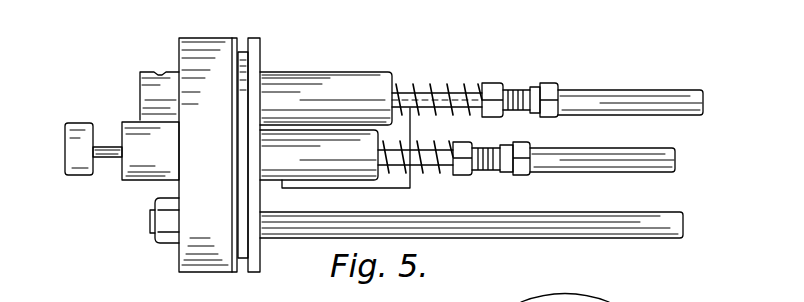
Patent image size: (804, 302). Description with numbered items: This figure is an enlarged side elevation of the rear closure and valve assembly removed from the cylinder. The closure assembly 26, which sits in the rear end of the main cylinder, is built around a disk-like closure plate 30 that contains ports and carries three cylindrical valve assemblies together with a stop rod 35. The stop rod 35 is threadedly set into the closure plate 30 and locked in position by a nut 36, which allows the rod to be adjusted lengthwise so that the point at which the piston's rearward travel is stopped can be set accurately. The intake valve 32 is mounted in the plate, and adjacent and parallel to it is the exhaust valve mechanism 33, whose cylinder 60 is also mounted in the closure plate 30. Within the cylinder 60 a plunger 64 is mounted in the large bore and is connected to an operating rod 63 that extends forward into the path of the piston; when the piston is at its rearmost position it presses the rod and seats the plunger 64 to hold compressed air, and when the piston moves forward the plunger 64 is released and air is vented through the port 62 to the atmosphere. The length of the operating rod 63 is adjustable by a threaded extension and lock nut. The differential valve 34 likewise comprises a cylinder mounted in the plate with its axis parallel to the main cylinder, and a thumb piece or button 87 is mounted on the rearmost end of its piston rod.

The closure assembly 26 is at (413, 53).
The closure plate 30 is at (218, 272).
The intake valve 32 is at (352, 168).
The exhaust valve mechanism 33 is at (313, 82).
The differential valve 34 is at (398, 203).
The stop rod 35 is at (635, 228).
The nut 36 is at (165, 238).
The cylinder 60 is at (353, 85).
The port 62 is at (162, 72).
The operating rod 63 is at (598, 97).
The plunger 64 is at (442, 92).
The thumb piece 87 is at (86, 175).